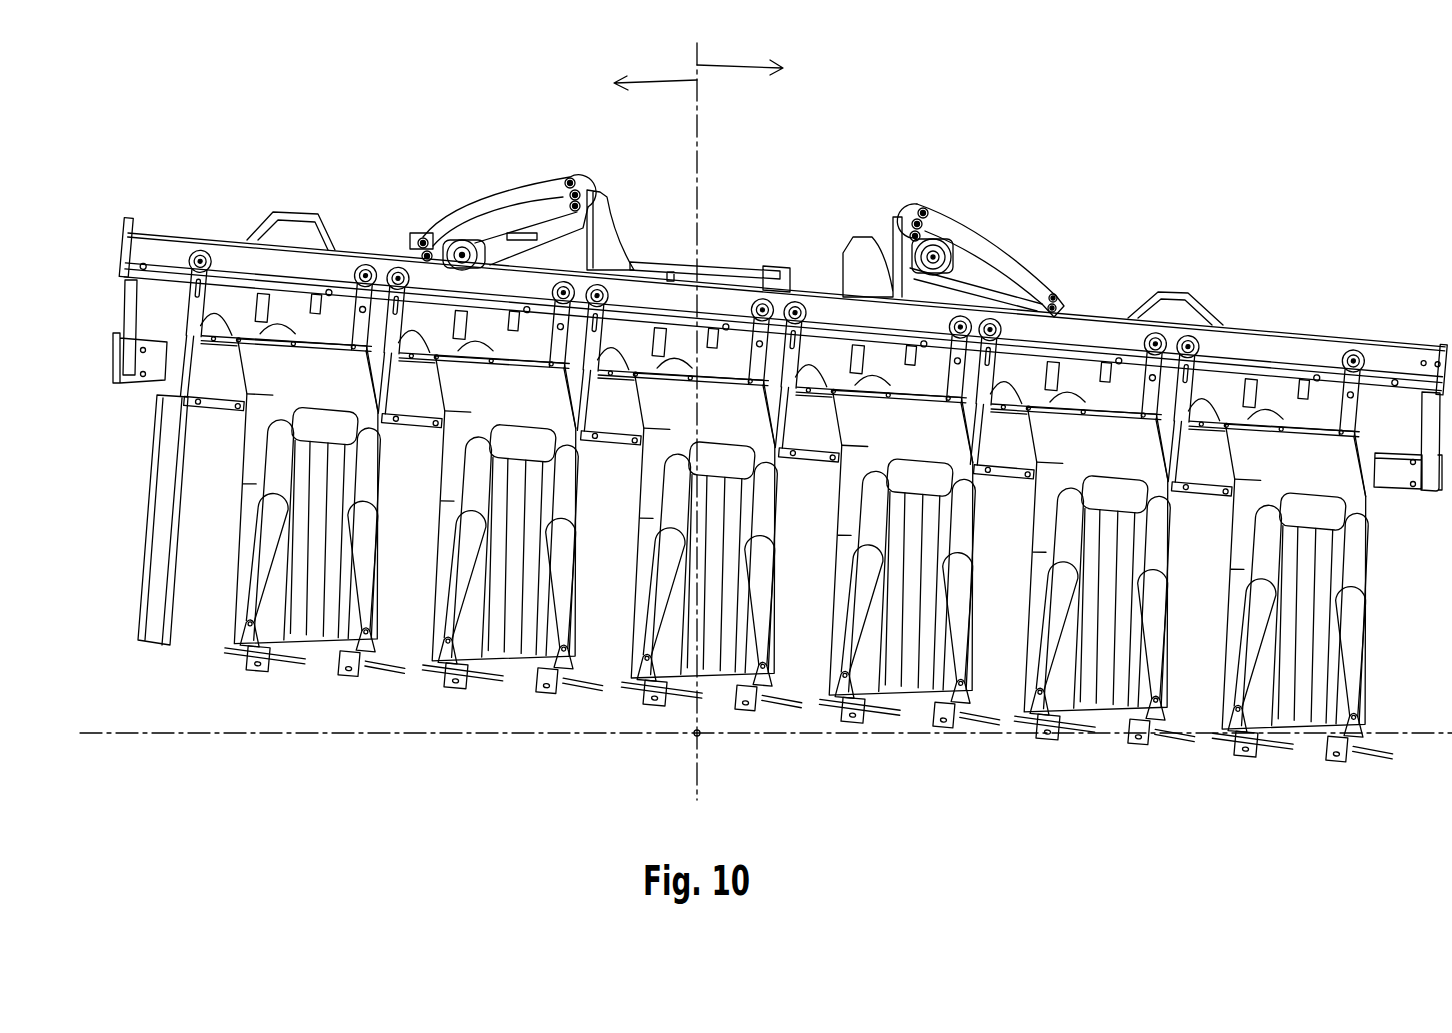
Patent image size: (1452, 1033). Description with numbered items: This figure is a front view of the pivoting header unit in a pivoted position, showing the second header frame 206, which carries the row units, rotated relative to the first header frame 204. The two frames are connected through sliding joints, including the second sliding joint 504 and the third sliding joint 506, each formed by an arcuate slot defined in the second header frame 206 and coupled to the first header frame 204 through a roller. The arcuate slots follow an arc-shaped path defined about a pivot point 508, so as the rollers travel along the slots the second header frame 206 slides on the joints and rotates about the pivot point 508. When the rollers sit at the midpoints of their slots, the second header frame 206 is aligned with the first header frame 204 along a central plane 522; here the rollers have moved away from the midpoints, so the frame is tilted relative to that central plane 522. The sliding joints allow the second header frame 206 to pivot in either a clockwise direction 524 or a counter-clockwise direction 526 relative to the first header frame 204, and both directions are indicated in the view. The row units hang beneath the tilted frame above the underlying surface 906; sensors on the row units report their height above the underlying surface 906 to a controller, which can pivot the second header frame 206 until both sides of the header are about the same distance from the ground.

The second header frame 206 is at (224, 226).
The first header frame 204 is at (741, 262).
The second sliding joint 504 is at (504, 184).
The third sliding joint 506 is at (1020, 242).
The central plane 522 is at (697, 113).
The clockwise direction 524 is at (738, 62).
The counter-clockwise direction 526 is at (658, 80).
The pivot point 508 is at (697, 736).
The underlying surface 906 is at (488, 734).